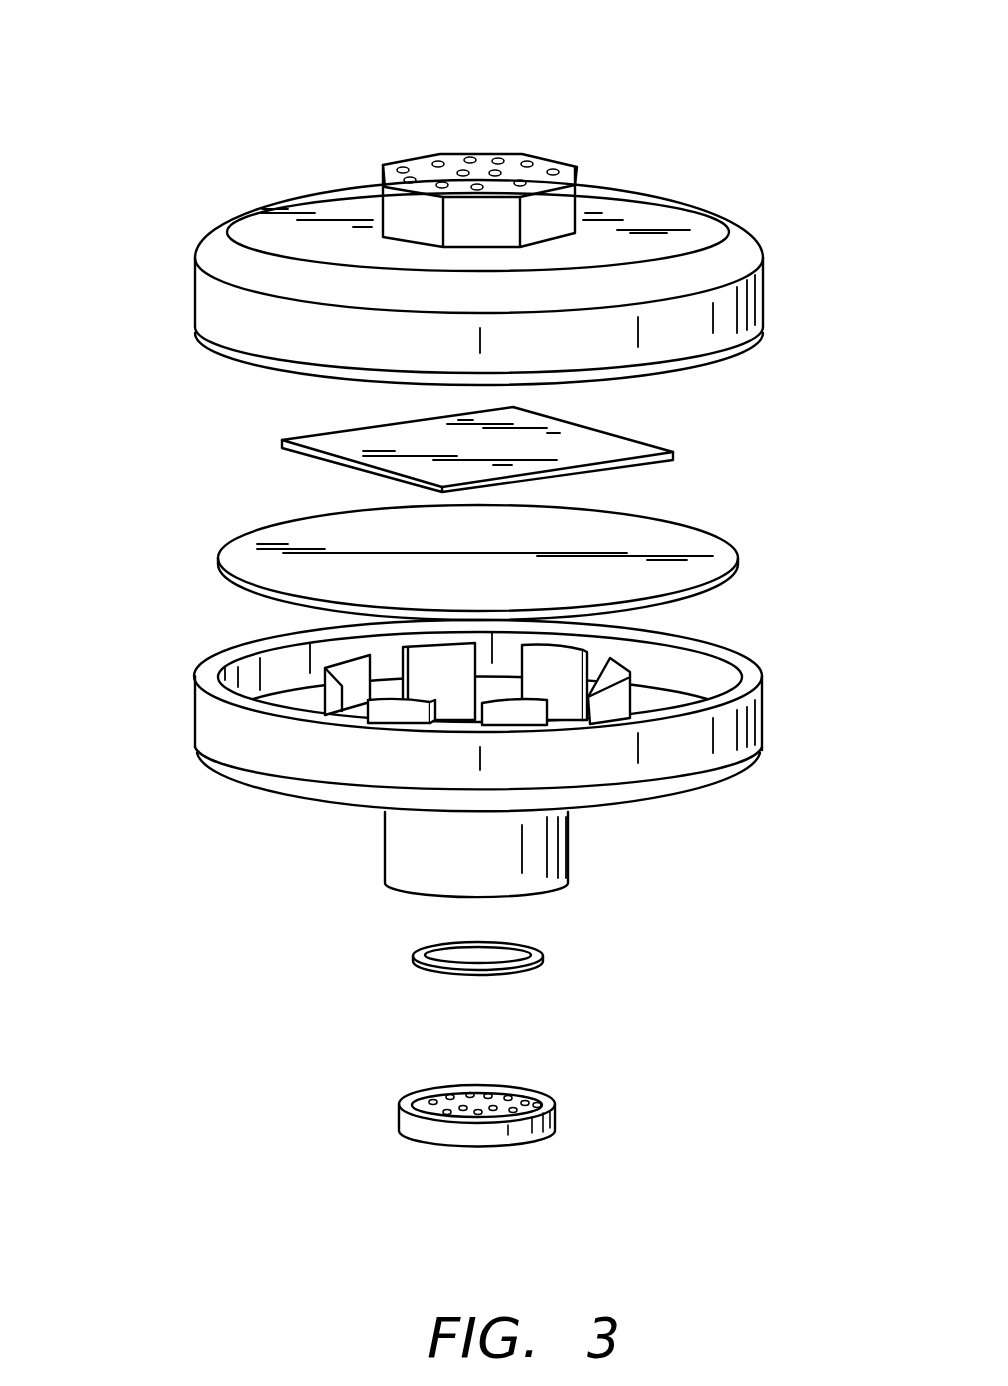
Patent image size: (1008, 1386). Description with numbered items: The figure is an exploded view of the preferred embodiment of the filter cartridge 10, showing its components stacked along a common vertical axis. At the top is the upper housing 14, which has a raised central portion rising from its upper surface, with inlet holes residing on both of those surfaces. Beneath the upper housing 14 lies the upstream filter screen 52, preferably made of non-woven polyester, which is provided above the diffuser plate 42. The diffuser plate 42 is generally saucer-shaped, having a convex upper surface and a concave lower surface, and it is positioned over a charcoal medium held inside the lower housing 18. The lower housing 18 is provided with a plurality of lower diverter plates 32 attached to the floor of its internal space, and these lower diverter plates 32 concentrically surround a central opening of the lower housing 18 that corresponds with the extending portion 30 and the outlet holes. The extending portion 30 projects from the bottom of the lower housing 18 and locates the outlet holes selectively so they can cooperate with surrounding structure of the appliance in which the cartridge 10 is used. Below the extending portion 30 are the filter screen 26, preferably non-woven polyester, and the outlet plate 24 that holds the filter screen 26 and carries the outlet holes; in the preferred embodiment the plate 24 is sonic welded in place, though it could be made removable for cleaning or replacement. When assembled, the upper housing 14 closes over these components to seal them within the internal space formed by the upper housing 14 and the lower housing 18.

The filter cartridge 10 is at (745, 100).
The upper housing 14 is at (200, 275).
The upstream filter screen 52 is at (633, 440).
The diffuser plate 42 is at (232, 548).
The lower housing 18 is at (223, 780).
The lower diverter plates 32 is at (565, 663).
The extending portion 30 is at (573, 843).
The filter screen 26 is at (543, 952).
The outlet plate 24 is at (423, 1142).